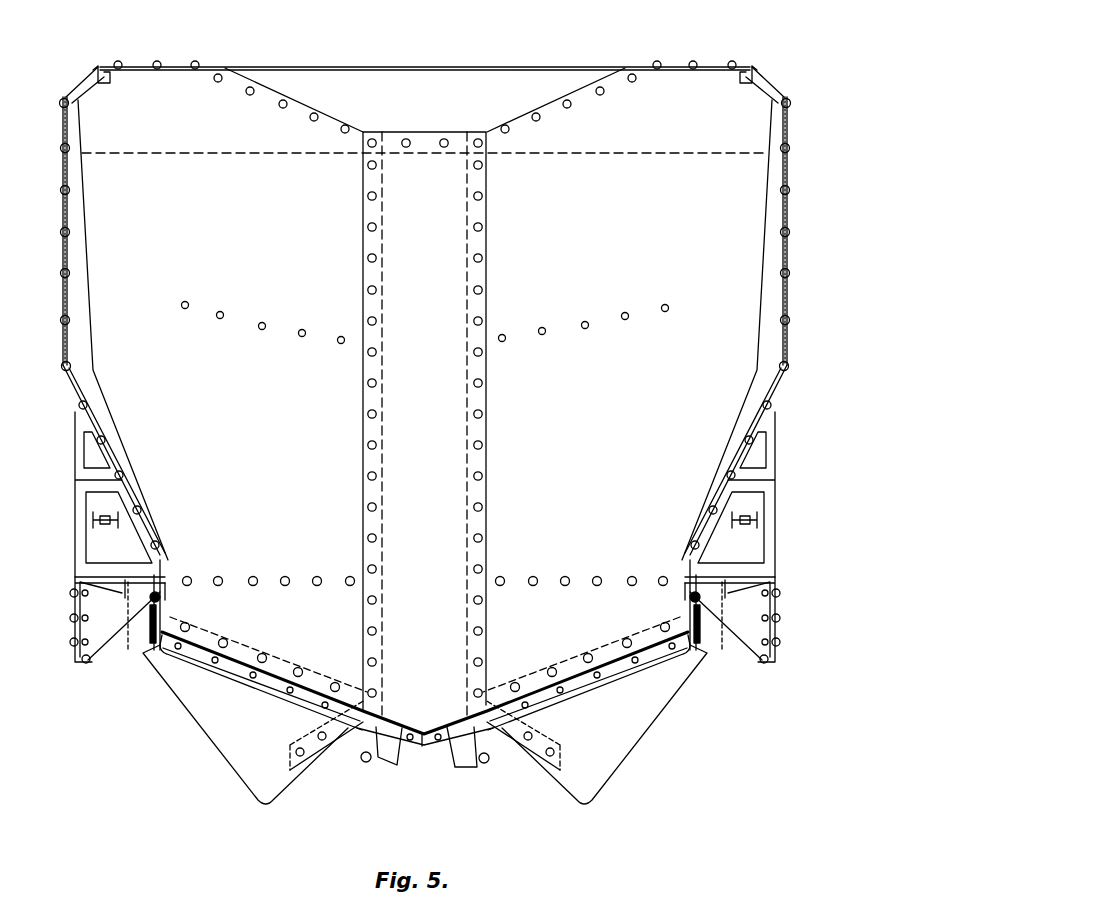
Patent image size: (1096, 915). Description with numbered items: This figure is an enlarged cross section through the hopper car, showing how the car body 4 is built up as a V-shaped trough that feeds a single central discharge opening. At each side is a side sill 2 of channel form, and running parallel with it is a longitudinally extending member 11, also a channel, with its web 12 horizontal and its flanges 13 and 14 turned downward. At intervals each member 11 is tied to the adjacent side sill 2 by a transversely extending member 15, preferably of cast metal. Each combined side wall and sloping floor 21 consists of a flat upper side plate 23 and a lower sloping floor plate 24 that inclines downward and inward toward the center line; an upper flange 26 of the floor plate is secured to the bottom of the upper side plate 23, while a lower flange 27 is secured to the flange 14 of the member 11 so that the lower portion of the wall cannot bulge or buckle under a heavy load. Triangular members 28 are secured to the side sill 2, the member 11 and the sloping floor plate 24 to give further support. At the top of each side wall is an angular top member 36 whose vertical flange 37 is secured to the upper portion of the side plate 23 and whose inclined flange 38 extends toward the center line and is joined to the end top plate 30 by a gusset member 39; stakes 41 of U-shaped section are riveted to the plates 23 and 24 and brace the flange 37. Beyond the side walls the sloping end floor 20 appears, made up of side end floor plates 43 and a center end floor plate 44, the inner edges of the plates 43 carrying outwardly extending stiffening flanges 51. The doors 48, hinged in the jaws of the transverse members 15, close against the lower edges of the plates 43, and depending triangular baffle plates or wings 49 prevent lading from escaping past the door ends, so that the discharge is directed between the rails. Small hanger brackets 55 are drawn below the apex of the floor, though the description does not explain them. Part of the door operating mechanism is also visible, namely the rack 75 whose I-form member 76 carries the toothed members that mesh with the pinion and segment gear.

The side sill 2 is at (75, 628).
The car body 4 is at (548, 80).
The longitudinally extending member 11 is at (158, 575).
The web 12 is at (165, 592).
The flange 13 is at (120, 592).
The flange 14 is at (167, 598).
The transversely extending member 15 is at (117, 620).
The sloping end floor 20 is at (424, 421).
The combined side wall and sloping floor 21 is at (63, 192).
The upper side plate 23 is at (63, 252).
The sloping floor plate 24 is at (72, 395).
The upper flange 26 is at (75, 366).
The lower flange 27 is at (170, 632).
The triangular member 28 is at (83, 443).
The end top plate 30 is at (418, 85).
The top member 36 is at (68, 90).
The vertically disposed flange 37 is at (60, 103).
The inclined flange 38 is at (100, 75).
The gusset member 39 is at (172, 66).
The stake 41 is at (82, 300).
The side end floor plate 43 is at (425, 369).
The center end floor plate 44 is at (425, 418).
The door 48 is at (278, 666).
The baffle plate or wing 49 is at (243, 733).
The stiffening flange 51 is at (470, 330).
The hanger bracket 55 is at (468, 765).
The rack 75 is at (92, 518).
The I-form member 76 is at (103, 522).